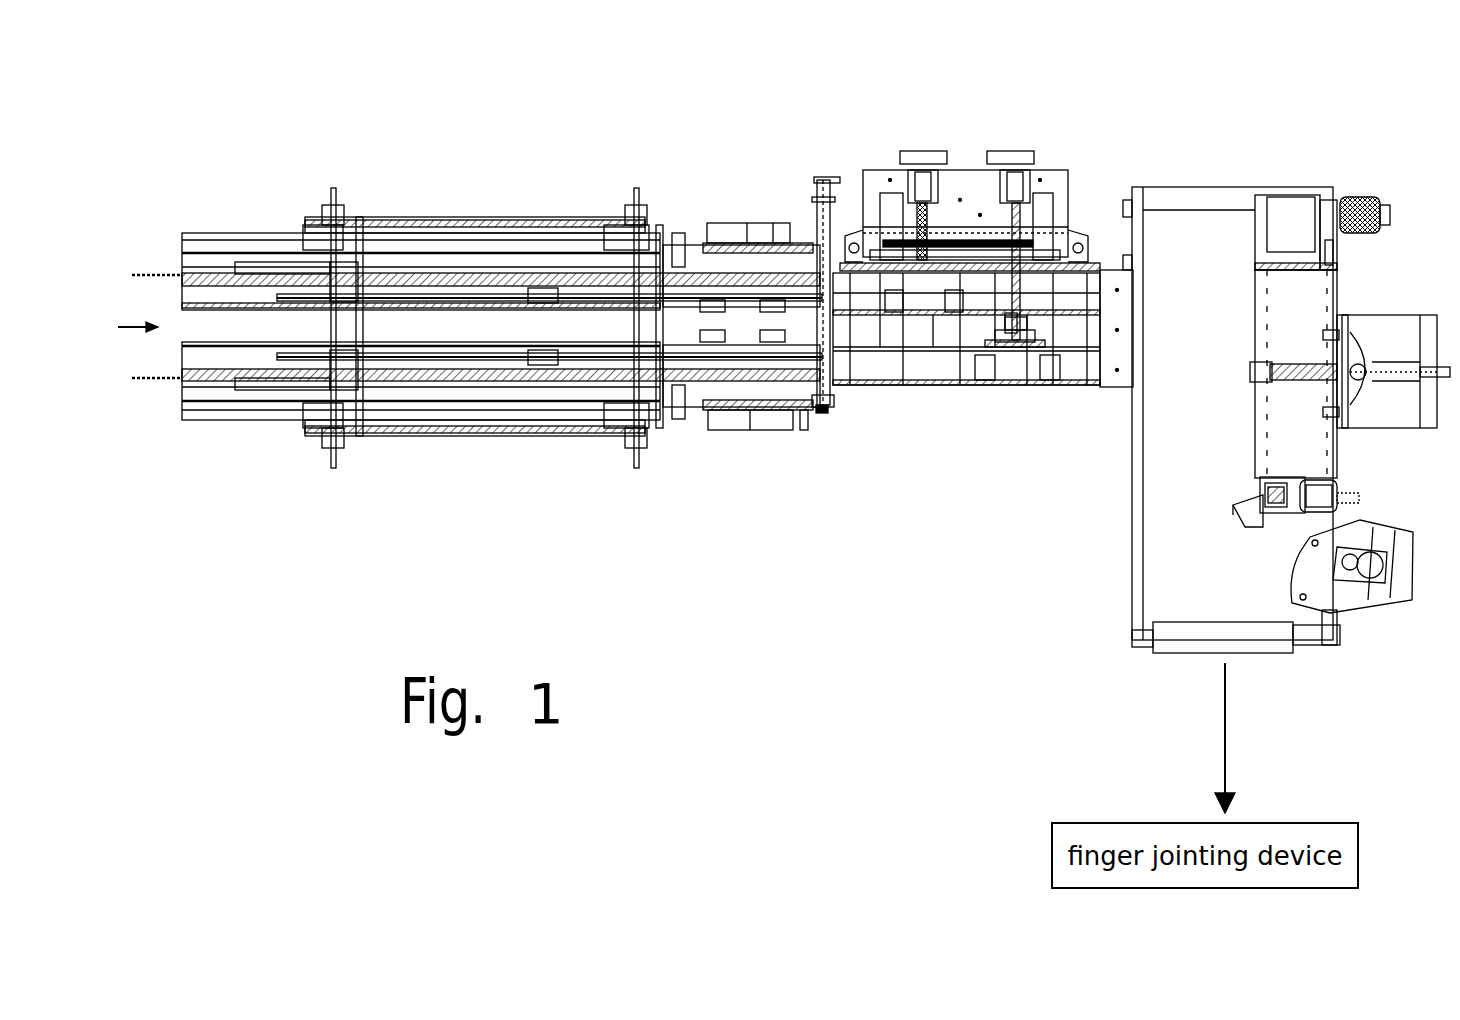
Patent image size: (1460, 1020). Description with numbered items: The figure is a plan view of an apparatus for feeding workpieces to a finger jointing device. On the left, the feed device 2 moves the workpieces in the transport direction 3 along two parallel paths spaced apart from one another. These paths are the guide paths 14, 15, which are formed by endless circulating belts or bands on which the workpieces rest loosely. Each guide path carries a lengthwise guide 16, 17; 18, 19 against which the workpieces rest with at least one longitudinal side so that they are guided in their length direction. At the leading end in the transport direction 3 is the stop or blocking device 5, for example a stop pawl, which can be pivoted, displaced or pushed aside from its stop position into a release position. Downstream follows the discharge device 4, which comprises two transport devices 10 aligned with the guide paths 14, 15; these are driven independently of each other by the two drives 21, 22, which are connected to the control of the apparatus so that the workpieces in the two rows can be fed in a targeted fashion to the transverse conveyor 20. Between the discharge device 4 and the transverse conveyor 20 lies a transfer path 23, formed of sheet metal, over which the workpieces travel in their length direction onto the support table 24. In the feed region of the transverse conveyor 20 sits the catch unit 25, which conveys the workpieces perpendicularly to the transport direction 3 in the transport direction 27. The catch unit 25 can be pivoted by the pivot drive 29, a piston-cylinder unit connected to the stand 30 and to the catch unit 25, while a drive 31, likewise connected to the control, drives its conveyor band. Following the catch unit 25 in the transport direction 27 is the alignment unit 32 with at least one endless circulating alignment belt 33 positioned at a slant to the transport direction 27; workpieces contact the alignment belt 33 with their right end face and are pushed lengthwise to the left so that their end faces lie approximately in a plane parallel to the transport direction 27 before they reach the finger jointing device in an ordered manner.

The feed device 2 is at (440, 134).
The transport direction 3 is at (121, 334).
The discharge device 4 is at (948, 113).
The stop or blocking device 5 is at (815, 275).
The transport device 10 is at (877, 170).
The guide path 14 is at (733, 293).
The guide path 15 is at (758, 375).
The lengthwise guide 16 is at (474, 288).
The lengthwise guide 17 is at (420, 297).
The lengthwise guide 18 is at (465, 372).
The lengthwise guide 19 is at (503, 362).
The transverse conveyor 20 is at (1320, 156).
The drive 21 is at (925, 260).
The drive 22 is at (1013, 183).
The transfer path 23 is at (1117, 290).
The support table 24 is at (1165, 565).
The catch unit 25 is at (1308, 323).
The transport direction 27 is at (1207, 428).
The pivot drive 29 is at (1297, 373).
The stand 30 is at (1387, 412).
The drive 31 is at (1275, 513).
The alignment unit 32 is at (1370, 613).
The alignment belt 33 is at (1313, 543).